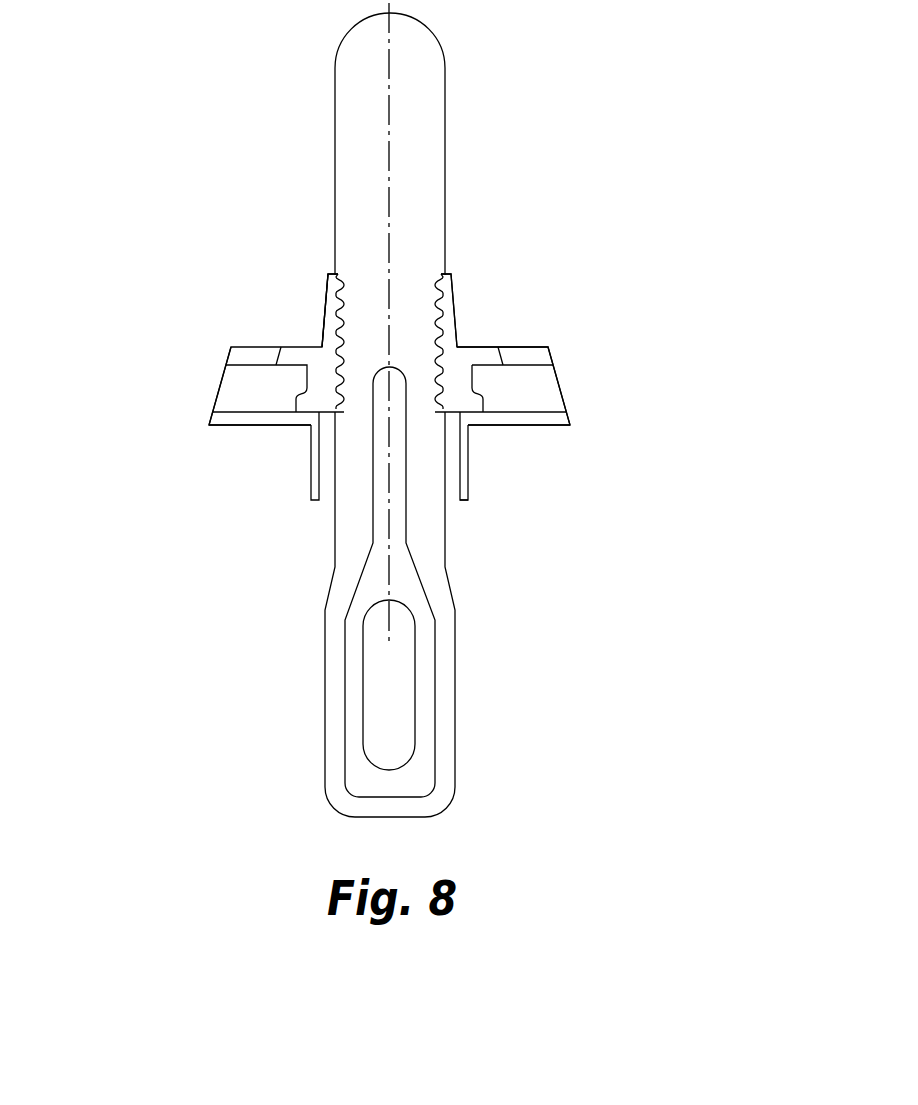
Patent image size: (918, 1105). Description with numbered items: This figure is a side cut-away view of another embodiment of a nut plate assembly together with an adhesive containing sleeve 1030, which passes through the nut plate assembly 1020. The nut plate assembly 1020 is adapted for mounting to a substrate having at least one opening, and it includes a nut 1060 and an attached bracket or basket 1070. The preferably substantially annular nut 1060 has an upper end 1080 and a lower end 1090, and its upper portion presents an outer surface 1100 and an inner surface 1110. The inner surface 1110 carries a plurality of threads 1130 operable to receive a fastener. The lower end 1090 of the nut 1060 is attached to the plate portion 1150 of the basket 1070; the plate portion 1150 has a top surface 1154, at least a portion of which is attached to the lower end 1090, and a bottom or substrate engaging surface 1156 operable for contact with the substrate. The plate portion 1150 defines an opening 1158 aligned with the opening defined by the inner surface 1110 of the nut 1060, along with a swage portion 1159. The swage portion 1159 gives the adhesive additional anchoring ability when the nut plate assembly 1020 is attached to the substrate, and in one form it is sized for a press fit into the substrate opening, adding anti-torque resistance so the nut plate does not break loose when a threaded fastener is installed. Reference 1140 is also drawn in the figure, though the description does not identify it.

The adhesive containing sleeve 1030 is at (445, 80).
The threads 1130 is at (435, 347).
The inner surface 1110 is at (437, 300).
The upper end 1080 is at (482, 295).
The lower end 1090 is at (488, 408).
The nut plate assembly 1020 is at (604, 381).
The plate portion 1150 is at (584, 412).
The leg 1140 is at (462, 424).
The swage portion 1159 is at (468, 500).
The basket 1070 is at (172, 375).
The nut 1060 is at (326, 302).
The outer surface 1100 is at (322, 332).
The top surface 1154 is at (215, 406).
The substrate engaging surface 1156 is at (237, 427).
The opening 1158 is at (328, 492).